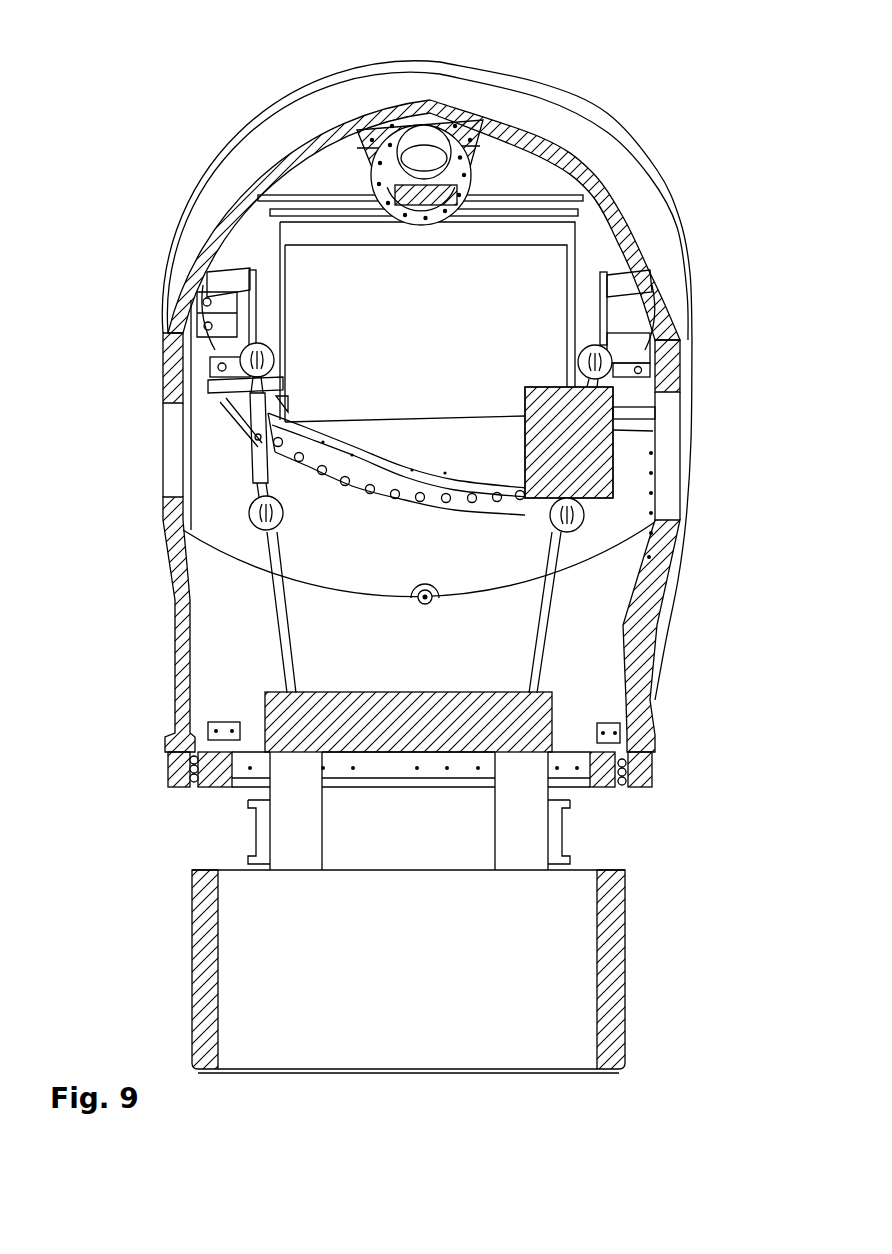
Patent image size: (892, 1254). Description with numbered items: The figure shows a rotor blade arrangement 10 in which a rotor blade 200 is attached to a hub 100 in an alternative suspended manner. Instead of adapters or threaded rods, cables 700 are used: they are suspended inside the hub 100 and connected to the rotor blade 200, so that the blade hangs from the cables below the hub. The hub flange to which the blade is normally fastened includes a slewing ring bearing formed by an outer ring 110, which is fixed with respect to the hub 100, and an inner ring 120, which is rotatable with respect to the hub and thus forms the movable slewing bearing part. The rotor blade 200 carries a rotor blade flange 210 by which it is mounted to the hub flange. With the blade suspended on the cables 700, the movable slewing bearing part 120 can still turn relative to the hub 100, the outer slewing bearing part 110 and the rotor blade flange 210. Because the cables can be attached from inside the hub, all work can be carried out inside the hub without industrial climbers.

The rotor blade arrangement 10 is at (245, 83).
The hub 100 is at (565, 128).
The cables 700 is at (283, 624).
The outer ring 110 is at (652, 773).
The inner ring 120 is at (613, 783).
The rotor blade flange 210 is at (607, 873).
The rotor blade 200 is at (560, 978).